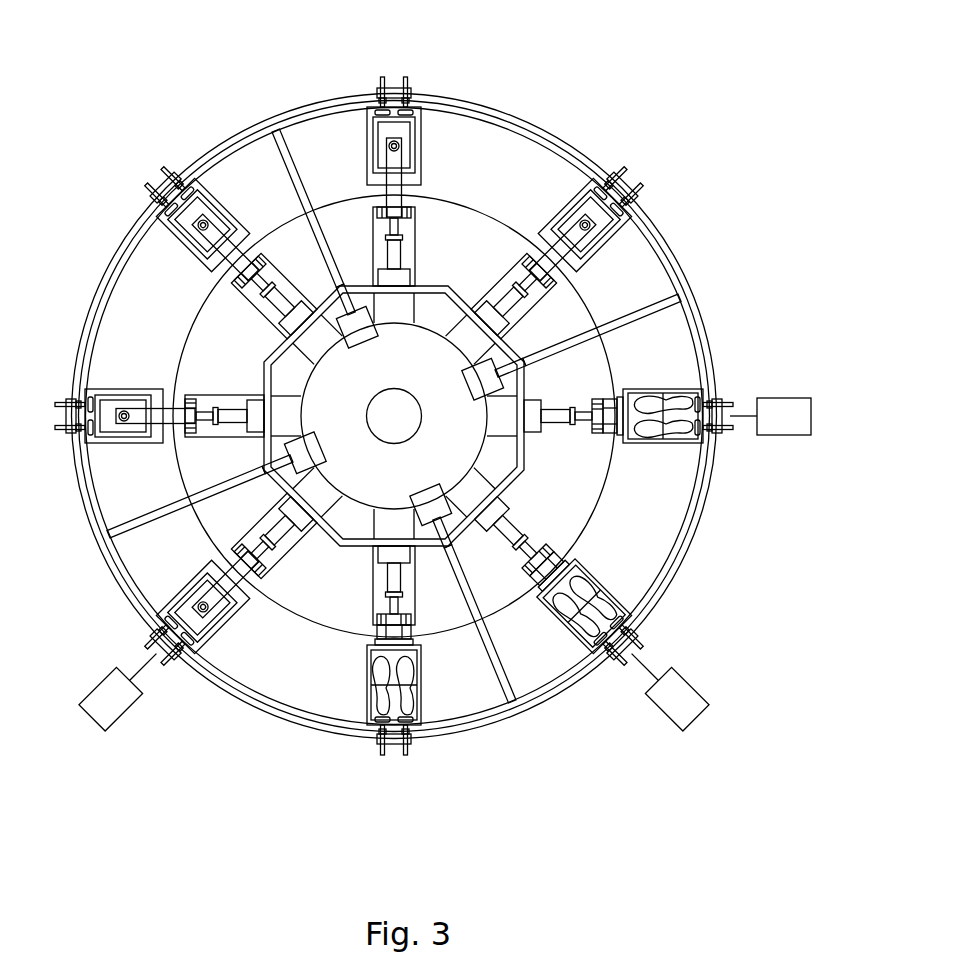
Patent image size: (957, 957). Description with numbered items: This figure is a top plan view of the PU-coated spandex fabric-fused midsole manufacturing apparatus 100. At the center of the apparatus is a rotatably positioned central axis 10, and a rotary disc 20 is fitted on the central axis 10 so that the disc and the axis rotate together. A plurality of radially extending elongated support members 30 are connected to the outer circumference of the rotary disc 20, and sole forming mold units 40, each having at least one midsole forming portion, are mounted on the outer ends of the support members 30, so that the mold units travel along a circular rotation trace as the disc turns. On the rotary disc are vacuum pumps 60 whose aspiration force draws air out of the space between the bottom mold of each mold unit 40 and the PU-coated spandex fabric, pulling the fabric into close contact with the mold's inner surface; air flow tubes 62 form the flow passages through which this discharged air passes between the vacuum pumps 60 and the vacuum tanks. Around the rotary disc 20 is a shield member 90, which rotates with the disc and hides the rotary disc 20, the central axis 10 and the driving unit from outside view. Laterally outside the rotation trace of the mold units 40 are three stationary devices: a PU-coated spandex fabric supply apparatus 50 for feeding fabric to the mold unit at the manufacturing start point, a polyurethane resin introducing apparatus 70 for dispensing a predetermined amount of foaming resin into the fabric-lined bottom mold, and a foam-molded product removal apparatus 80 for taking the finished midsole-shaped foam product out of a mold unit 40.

The midsole manufacturing apparatus 100 is at (173, 72).
The central axis 10 is at (402, 420).
The rotary disc 20 is at (453, 472).
The support member 30 is at (408, 237).
The sole forming mold unit 40 is at (226, 640).
The PU-coated spandex fabric supply apparatus 50 is at (678, 698).
The vacuum pump 60 is at (298, 452).
The air flow tube 62 is at (133, 525).
The polyurethane resin introducing apparatus 70 is at (102, 697).
The foam-molded product removal apparatus 80 is at (790, 398).
The shield member 90 is at (268, 372).